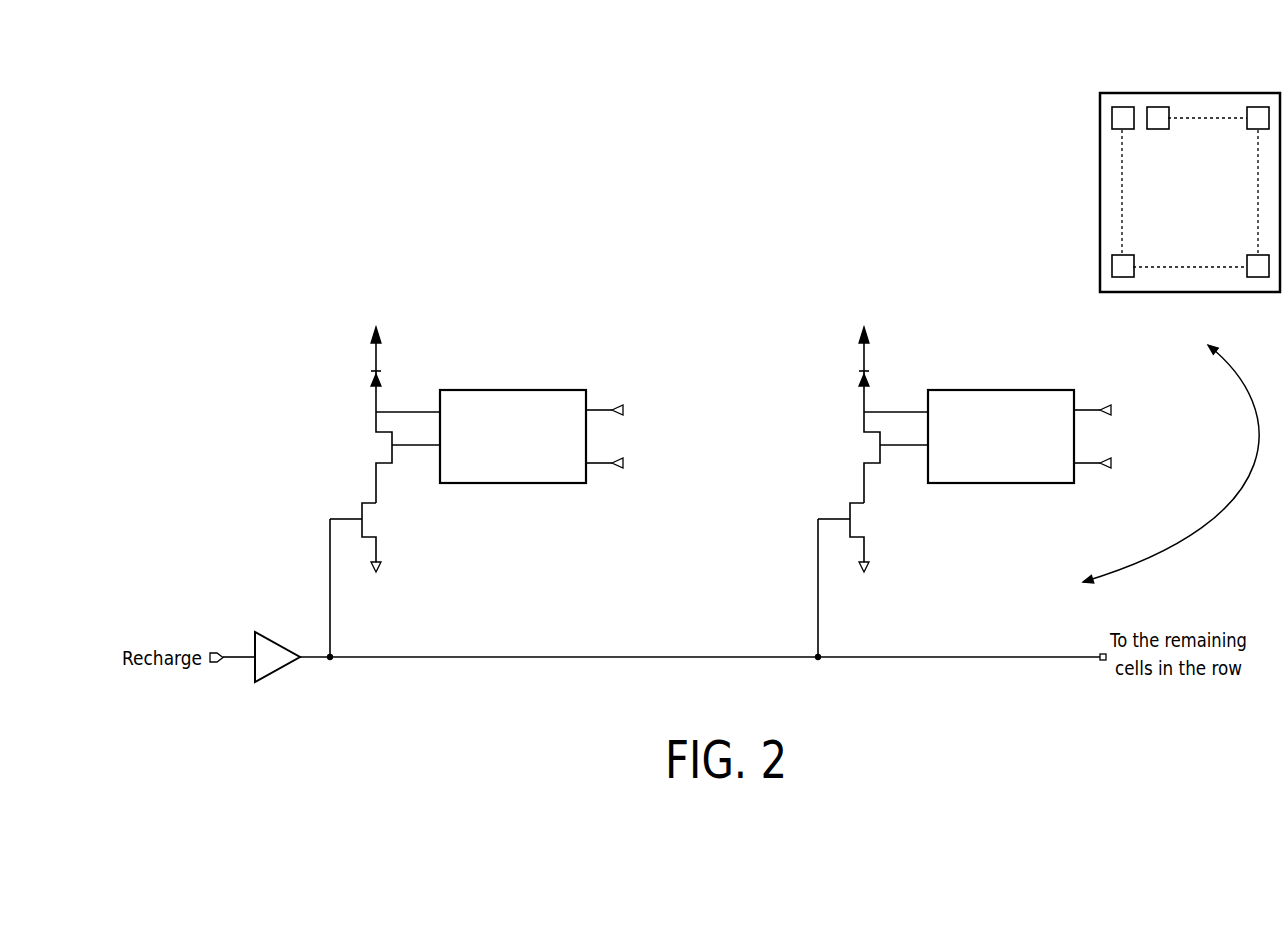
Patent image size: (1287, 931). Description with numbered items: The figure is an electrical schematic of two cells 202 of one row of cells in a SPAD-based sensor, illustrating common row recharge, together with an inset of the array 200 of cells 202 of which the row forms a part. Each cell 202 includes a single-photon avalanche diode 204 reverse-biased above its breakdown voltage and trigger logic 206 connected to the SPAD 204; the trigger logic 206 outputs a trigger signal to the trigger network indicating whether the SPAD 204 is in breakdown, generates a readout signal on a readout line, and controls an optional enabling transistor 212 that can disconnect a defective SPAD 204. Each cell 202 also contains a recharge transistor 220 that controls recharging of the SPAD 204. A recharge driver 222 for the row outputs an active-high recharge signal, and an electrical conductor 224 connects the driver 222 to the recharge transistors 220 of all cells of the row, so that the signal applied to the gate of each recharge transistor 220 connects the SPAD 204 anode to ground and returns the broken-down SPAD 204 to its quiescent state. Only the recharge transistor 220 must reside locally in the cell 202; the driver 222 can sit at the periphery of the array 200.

The array 200 is at (1070, 128).
The cell 202 is at (306, 388).
The single-photon avalanche diode (SPAD) 204 is at (386, 379).
The trigger logic 206 is at (532, 390).
The enabling transistor 212 is at (360, 460).
The recharge transistor 220 is at (397, 524).
The recharge driver 222 is at (267, 633).
The electrical conductor 224 is at (490, 658).